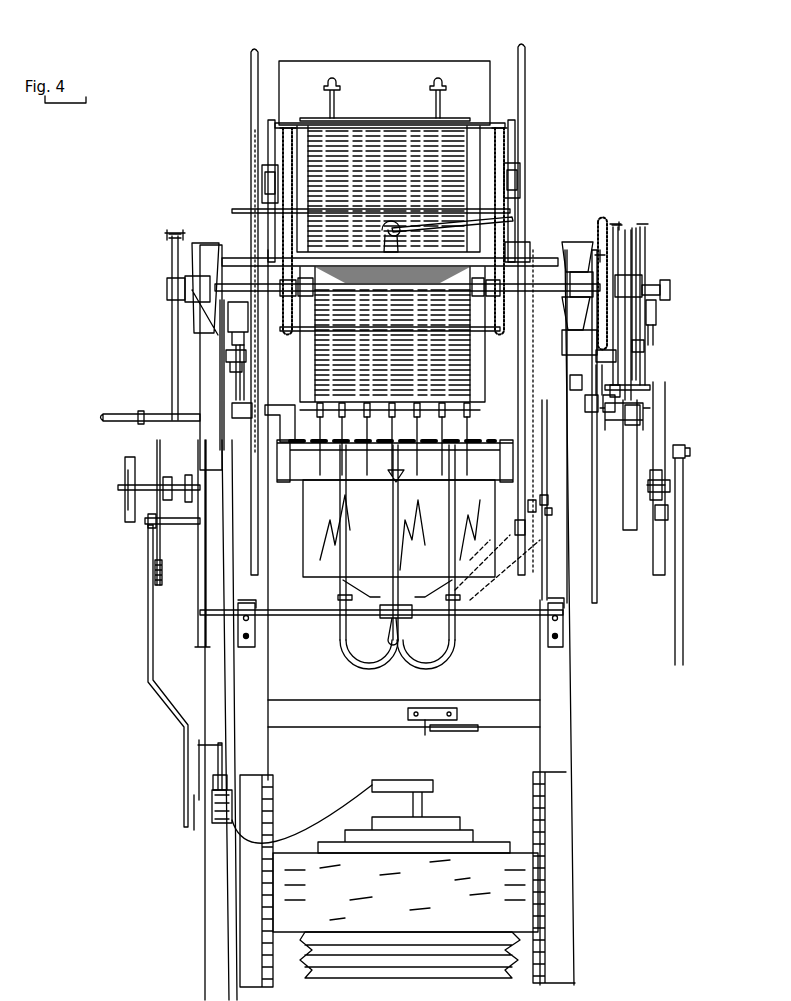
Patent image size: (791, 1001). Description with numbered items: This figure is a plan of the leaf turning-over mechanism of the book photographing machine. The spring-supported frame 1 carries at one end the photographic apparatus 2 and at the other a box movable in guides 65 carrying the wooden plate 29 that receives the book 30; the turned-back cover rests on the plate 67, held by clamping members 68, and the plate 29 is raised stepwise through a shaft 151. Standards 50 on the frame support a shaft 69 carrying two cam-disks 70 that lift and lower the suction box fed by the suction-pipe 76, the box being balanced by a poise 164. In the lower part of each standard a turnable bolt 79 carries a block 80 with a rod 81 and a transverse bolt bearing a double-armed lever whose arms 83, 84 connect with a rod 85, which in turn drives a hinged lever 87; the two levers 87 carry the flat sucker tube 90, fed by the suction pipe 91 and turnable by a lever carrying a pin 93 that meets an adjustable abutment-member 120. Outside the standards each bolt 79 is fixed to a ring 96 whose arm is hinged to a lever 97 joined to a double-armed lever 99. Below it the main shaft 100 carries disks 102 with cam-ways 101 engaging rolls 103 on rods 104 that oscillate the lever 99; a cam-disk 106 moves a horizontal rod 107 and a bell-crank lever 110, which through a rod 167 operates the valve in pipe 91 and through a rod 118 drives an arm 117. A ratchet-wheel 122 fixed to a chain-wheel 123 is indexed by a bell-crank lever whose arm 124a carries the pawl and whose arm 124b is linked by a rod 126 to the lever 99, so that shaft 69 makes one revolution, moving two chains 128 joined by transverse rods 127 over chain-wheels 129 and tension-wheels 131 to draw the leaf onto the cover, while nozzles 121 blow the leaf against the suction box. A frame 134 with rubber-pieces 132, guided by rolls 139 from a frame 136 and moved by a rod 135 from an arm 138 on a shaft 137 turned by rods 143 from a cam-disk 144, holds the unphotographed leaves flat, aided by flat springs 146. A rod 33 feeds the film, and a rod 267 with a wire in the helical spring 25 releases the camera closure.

The frame 1 is at (555, 700).
The photographic apparatus 2 is at (445, 825).
The helical spring 25 is at (212, 822).
The wooden plate 29 is at (322, 572).
The book 30 is at (447, 160).
The rod 33 is at (668, 465).
The standards 50 is at (200, 252).
The guides 65 is at (125, 475).
The plate 67 is at (437, 70).
The clamping members 68 is at (437, 108).
The shaft 69 is at (262, 210).
The cam-disks 70 is at (522, 250).
The suction-pipe 76 is at (520, 220).
The turnable bolt 79 is at (656, 298).
The block 80 is at (632, 250).
The rod 81 is at (640, 415).
The lever arm 83 is at (210, 325).
The lever arm 84 is at (185, 318).
The rod 85 is at (226, 356).
The double-armed lever 87 is at (620, 390).
The flat tube 90 is at (548, 500).
The suction pipe 91 is at (252, 72).
The pin 93 is at (615, 402).
The ring 96 is at (168, 288).
The lever 97 is at (165, 238).
The lever 99 is at (172, 275).
The main shaft 100 is at (622, 432).
The cam-way 101 is at (690, 452).
The disk 102 is at (157, 447).
The roll 103 is at (670, 488).
The rod 104 is at (163, 488).
The cam-disk 106 is at (665, 515).
The horizontal rod 107 is at (598, 400).
The bell-crank lever 110 is at (582, 380).
The arm 117 is at (648, 312).
The rod 118 is at (602, 372).
The abutment-member 120 is at (650, 335).
The nozzles 121 is at (430, 590).
The ratchet-wheel 122 is at (638, 262).
The chain-wheel 123 is at (640, 228).
The lever arm 124a is at (650, 278).
The lever arm 124b is at (668, 285).
The rod 126 is at (648, 265).
The transverse rods 127 is at (413, 213).
The chains 128 is at (603, 225).
The chain-wheels 129 is at (560, 262).
The tension-wheels 131 is at (268, 150).
The tubular rubber-pieces 132 is at (535, 560).
The frame 134 is at (536, 508).
The rod 135 is at (412, 625).
The frame 136 is at (255, 570).
The shaft 137 is at (455, 640).
The arm 138 is at (430, 655).
The rolls 139 is at (552, 512).
The rods 143 is at (198, 548).
The cam-disk 144 is at (185, 520).
The flat springs 146 is at (525, 528).
The shaft 151 is at (102, 418).
The poise 164 is at (262, 185).
The rod 167 is at (616, 355).
The rod 267 is at (155, 582).